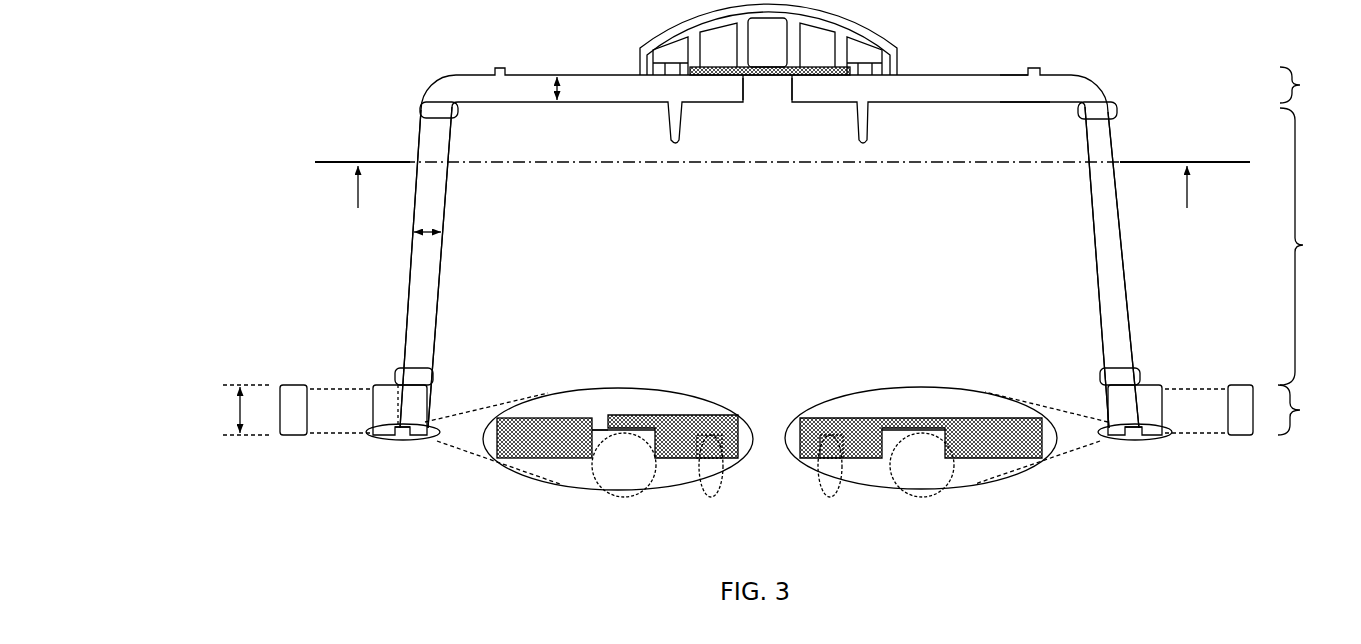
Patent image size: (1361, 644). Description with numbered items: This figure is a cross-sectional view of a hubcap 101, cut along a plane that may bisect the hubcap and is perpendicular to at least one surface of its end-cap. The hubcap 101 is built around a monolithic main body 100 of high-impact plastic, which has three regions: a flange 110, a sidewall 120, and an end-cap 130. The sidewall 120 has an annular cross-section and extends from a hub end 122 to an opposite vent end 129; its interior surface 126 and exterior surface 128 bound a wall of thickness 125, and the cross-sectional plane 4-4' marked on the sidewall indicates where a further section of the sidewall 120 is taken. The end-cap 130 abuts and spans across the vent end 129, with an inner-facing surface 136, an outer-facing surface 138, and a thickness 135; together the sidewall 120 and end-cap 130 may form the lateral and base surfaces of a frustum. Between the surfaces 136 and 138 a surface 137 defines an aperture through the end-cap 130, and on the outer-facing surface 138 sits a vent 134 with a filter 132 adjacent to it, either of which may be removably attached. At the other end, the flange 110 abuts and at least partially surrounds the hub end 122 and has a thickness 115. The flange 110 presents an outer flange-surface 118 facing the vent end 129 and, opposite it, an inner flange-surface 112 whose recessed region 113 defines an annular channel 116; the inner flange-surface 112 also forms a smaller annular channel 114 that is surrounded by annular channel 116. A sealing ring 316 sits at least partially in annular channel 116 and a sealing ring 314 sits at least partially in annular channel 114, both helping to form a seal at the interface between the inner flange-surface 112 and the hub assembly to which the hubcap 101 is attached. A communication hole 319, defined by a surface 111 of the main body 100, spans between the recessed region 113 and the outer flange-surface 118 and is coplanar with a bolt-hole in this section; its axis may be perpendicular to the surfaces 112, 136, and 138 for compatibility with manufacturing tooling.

The monolithic main body 100 is at (995, 99).
The hubcap 101 is at (218, 148).
The cross-sectional plane 4 is at (782, 197).
The cross-sectional plane 4' is at (1187, 200).
The flange 110 is at (1310, 410).
The surface 111 is at (603, 420).
The inner flange-surface 112 is at (289, 440).
The recessed region 113 is at (622, 434).
The annular channel 114 is at (826, 470).
The thickness 115 is at (238, 411).
The annular channel 116 is at (398, 440).
The outer flange-surface 118 is at (380, 382).
The sidewall 120 is at (1312, 246).
The hub end 122 is at (433, 376).
The thickness 125 is at (432, 236).
The interior surface 126 is at (438, 301).
The exterior surface 128 is at (410, 272).
The vent end 129 is at (420, 108).
The end-cap 130 is at (1309, 85).
The filter 132 is at (768, 66).
The vent 134 is at (640, 52).
The thickness 135 is at (555, 90).
The inner-facing surface 136 is at (1026, 105).
The surface 137 is at (787, 92).
The outer-facing surface 138 is at (1013, 72).
The sealing ring 314 is at (712, 462).
The sealing ring 316 is at (603, 487).
The communication hole 319 is at (396, 380).